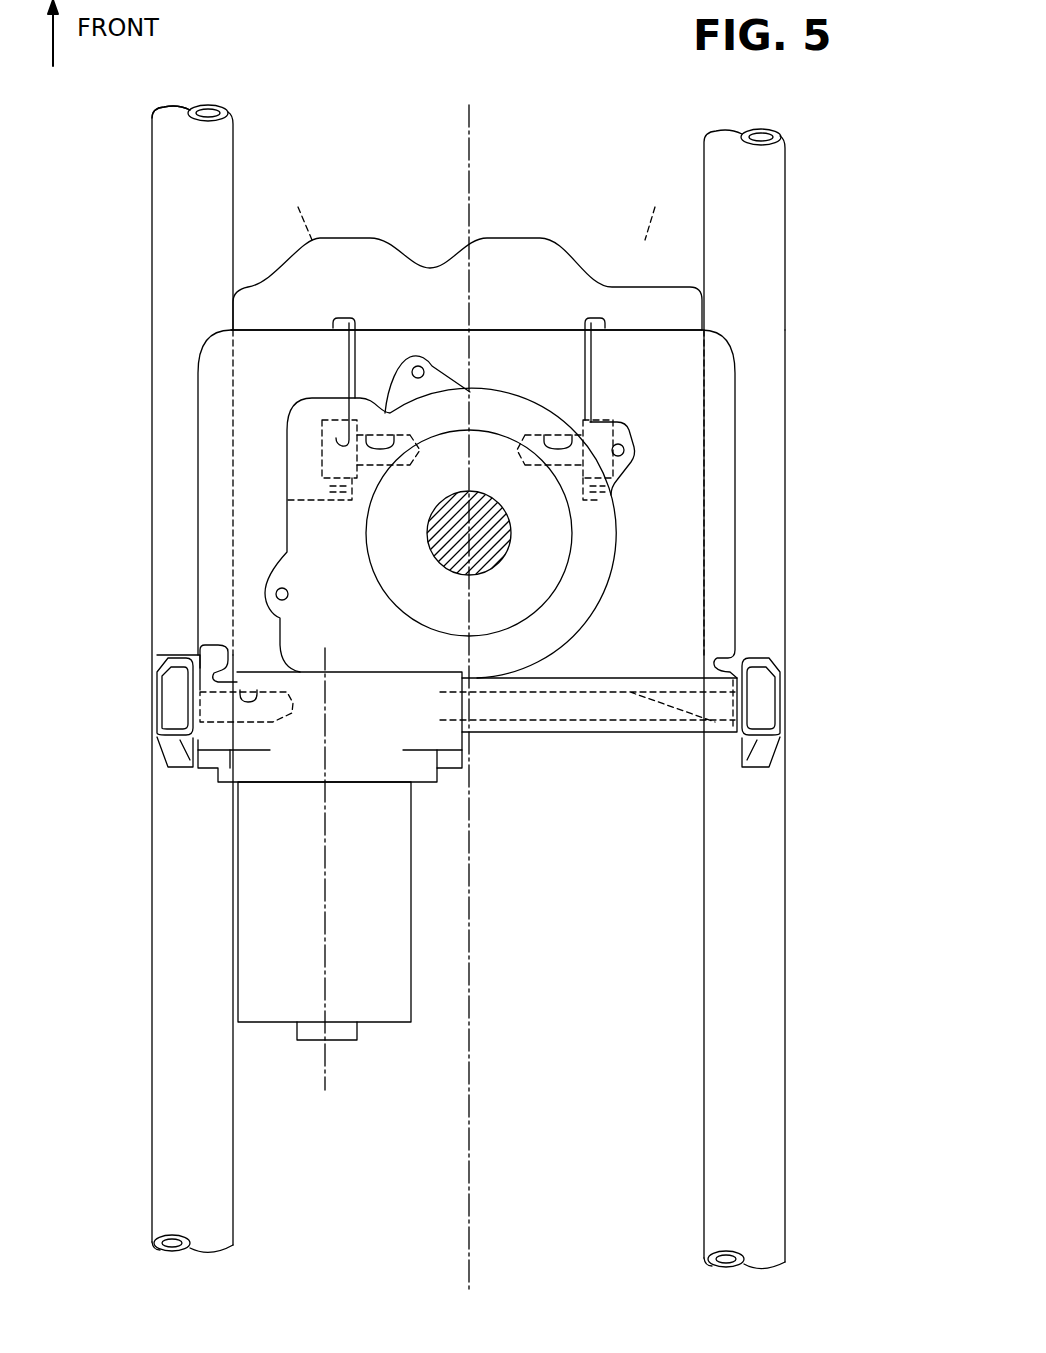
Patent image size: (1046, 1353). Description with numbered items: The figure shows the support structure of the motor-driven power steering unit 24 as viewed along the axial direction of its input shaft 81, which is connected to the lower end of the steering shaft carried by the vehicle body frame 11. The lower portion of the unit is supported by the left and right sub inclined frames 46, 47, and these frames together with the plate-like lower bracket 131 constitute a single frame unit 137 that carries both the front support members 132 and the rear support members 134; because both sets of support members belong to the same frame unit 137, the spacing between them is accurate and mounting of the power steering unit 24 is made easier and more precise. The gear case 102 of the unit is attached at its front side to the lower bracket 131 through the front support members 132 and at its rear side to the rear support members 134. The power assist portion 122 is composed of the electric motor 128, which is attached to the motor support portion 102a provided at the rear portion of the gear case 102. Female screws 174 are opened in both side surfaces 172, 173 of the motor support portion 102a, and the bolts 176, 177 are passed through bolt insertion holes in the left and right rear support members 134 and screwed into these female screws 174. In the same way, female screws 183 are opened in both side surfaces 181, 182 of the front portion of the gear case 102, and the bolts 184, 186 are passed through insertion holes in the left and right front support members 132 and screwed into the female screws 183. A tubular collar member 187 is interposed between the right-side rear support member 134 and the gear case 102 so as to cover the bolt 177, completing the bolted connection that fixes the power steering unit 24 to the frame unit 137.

The vehicle body frame 11 is at (150, 212).
The motor-driven power steering unit 24 is at (280, 557).
The sub inclined frame 46 is at (160, 1042).
The sub inclined frame 47 is at (778, 1068).
The input shaft 81 is at (505, 528).
The gear case 102 is at (285, 655).
The motor support portion 102a is at (293, 663).
The power assist portion 122 is at (262, 593).
The electric motor 128 is at (381, 1010).
The lower bracket 131 is at (677, 615).
The front support member 132 is at (350, 440).
The rear support member 134 is at (165, 748).
The frame unit 137 is at (747, 339).
The side surface 172 is at (185, 760).
The side surface 173 is at (462, 745).
The female screw 174 is at (198, 646).
The bolt 176 is at (170, 701).
The bolt 177 is at (772, 703).
The side surface 181 is at (336, 438).
The side surface 182 is at (612, 425).
The female screw 183 is at (379, 412).
The bolt 184 is at (322, 448).
The bolt 186 is at (619, 426).
The tubular collar member 187 is at (607, 740).